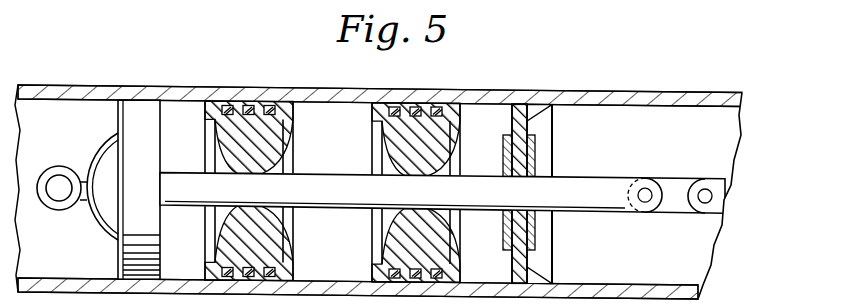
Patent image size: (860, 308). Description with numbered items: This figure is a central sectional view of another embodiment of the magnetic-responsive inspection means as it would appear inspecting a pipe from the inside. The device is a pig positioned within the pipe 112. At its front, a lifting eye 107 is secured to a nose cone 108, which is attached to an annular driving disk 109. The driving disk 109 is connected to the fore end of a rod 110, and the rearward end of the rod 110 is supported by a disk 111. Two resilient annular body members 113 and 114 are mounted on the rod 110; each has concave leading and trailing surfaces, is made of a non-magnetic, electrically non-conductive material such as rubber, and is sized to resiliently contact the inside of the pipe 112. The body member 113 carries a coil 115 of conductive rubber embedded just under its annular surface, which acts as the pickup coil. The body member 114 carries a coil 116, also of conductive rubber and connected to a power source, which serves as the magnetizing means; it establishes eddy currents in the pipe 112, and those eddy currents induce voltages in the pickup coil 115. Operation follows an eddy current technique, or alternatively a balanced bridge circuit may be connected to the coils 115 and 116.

The lifting eye 107 is at (55, 208).
The nose cone 108 is at (107, 218).
The annular driving disk 109 is at (143, 100).
The rod 110 is at (478, 200).
The disk 111 is at (532, 104).
The pipe 112 is at (485, 100).
The resilient annular body member 113 is at (262, 157).
The resilient annular body member 114 is at (378, 233).
The coil 115 is at (247, 110).
The coil 116 is at (395, 110).